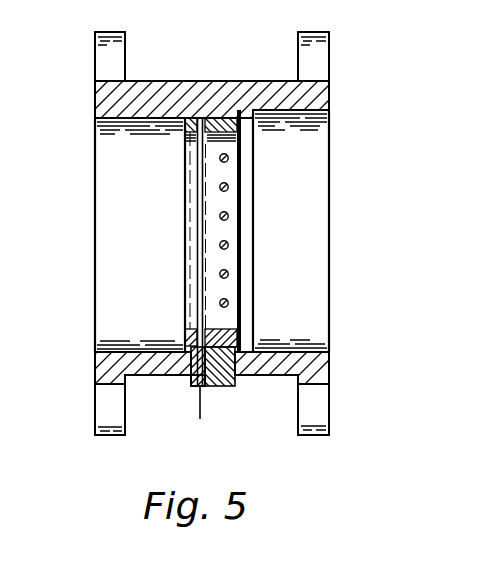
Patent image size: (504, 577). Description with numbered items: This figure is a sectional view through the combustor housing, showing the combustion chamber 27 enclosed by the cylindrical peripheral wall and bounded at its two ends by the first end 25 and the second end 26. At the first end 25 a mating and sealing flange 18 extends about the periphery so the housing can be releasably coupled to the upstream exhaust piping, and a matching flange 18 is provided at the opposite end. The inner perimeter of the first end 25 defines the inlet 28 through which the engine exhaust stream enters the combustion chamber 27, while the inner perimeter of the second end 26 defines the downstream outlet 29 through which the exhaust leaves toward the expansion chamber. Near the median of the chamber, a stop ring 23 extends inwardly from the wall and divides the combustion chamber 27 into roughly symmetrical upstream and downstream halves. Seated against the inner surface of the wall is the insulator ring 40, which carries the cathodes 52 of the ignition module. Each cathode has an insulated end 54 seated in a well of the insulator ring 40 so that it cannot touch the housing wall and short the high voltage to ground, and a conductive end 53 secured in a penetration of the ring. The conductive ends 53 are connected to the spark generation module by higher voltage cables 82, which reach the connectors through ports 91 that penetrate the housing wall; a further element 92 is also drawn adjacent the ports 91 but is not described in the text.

The mating and sealing flange 18 is at (330, 44).
The insulated end 54 is at (202, 118).
The insulator ring 40 is at (182, 124).
The cathodes 52 is at (228, 159).
The combustion chamber 27 is at (311, 215).
The downstream outlet 29 is at (330, 240).
The inlet 28 is at (95, 270).
The stop ring 23 is at (255, 312).
The conductive end 53 is at (185, 340).
The first end 25 is at (95, 372).
The second end 26 is at (330, 360).
The ports 91 is at (191, 382).
The plug insert 92 is at (235, 385).
The higher voltage cables 82 is at (203, 416).